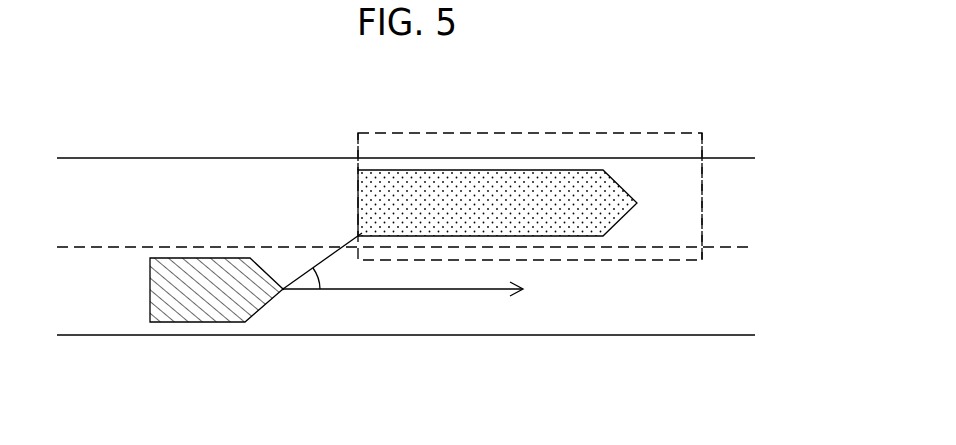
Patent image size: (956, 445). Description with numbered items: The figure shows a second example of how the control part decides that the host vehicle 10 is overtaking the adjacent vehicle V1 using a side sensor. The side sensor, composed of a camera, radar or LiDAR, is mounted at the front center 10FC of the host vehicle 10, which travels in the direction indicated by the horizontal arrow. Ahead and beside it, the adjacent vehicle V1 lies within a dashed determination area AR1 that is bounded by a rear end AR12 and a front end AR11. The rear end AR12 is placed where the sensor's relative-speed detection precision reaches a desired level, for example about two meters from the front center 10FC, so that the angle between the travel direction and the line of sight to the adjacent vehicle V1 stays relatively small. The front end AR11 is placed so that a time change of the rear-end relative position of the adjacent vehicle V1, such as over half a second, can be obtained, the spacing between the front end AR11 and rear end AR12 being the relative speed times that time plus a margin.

The host vehicle 10 is at (148, 290).
The front center of the host vehicle 10FC is at (286, 292).
The adjacent vehicle V1 is at (640, 178).
The determination area AR1 is at (529, 133).
The front end of the determination area AR11 is at (705, 214).
The rear end of the determination area AR12 is at (358, 145).